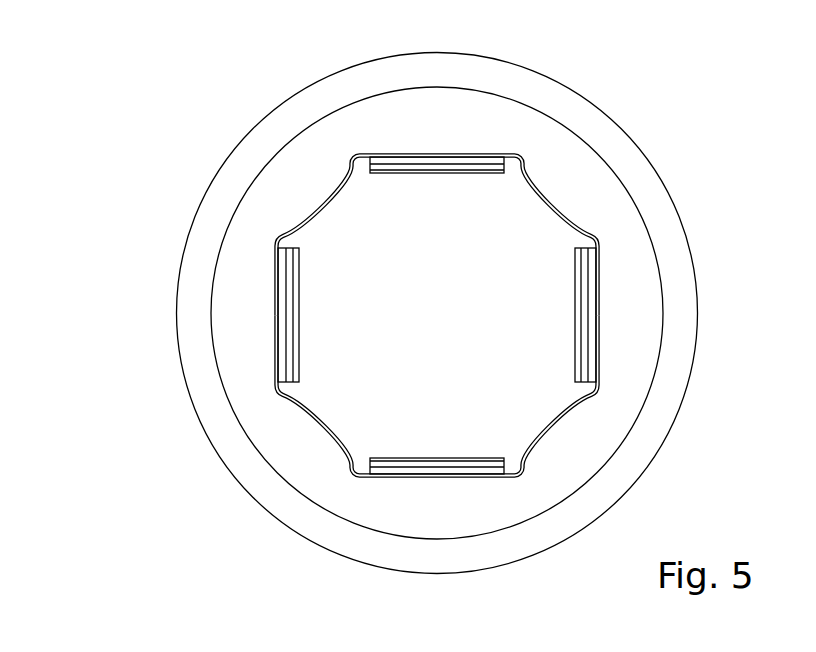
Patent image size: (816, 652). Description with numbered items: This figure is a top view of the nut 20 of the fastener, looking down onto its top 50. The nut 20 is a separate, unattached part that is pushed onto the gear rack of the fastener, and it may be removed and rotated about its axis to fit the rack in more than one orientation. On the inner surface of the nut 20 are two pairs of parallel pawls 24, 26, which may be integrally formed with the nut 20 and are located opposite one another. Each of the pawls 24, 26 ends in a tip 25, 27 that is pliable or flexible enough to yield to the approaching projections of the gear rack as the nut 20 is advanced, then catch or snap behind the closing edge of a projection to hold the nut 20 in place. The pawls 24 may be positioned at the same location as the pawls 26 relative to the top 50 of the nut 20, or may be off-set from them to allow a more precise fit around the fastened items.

The nut 20 is at (250, 140).
The top of the nut 50 is at (622, 259).
The pawls 24 is at (461, 167).
The tips 25 is at (420, 172).
The pawls 26 is at (288, 337).
The tips 27 is at (300, 297).